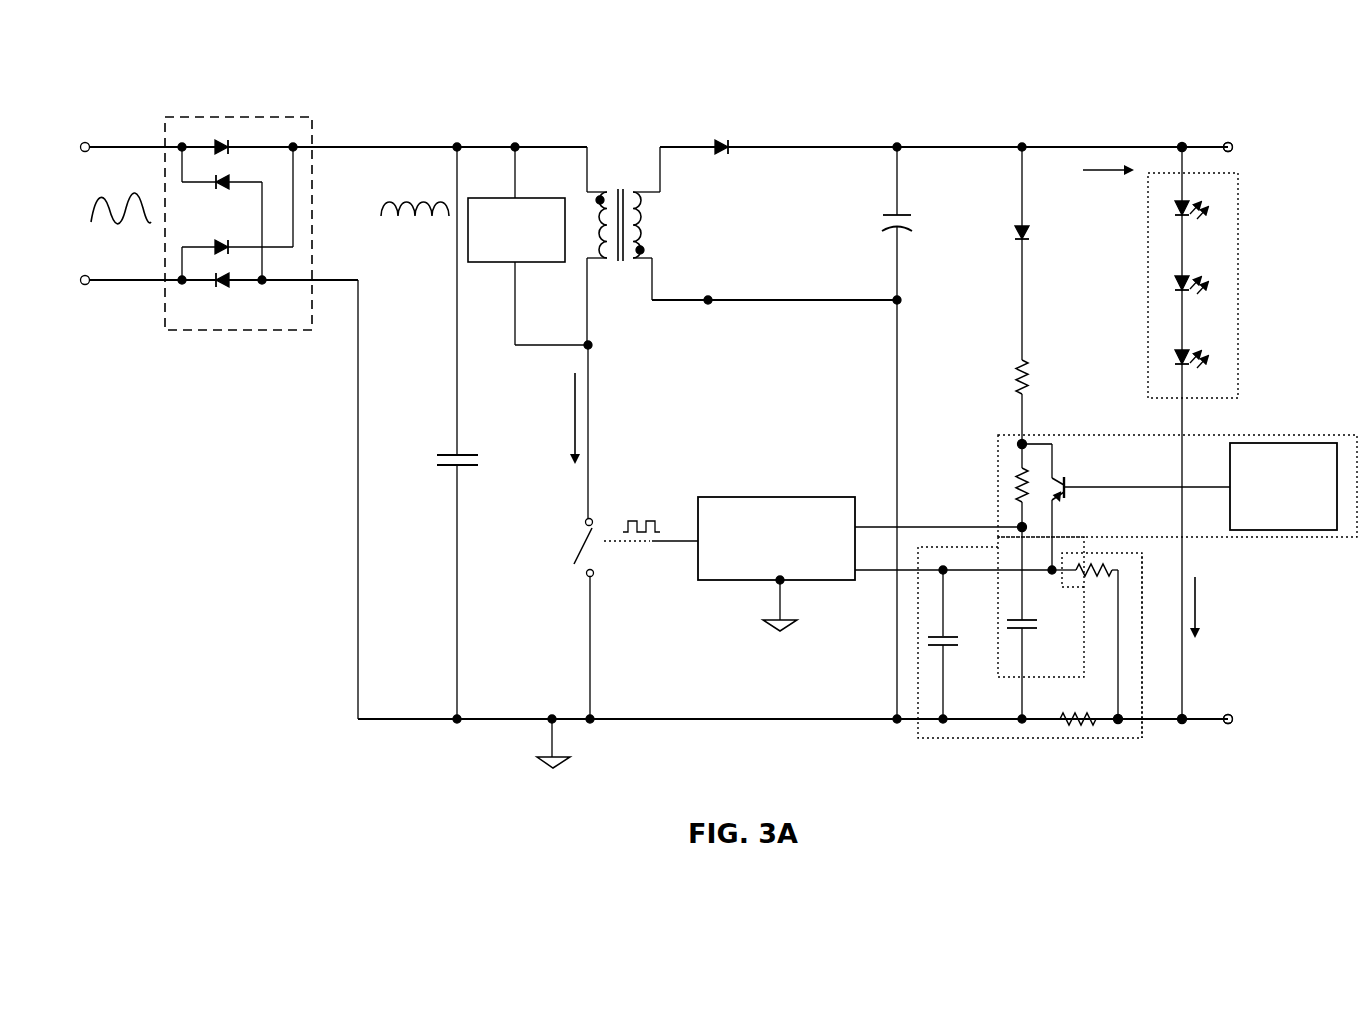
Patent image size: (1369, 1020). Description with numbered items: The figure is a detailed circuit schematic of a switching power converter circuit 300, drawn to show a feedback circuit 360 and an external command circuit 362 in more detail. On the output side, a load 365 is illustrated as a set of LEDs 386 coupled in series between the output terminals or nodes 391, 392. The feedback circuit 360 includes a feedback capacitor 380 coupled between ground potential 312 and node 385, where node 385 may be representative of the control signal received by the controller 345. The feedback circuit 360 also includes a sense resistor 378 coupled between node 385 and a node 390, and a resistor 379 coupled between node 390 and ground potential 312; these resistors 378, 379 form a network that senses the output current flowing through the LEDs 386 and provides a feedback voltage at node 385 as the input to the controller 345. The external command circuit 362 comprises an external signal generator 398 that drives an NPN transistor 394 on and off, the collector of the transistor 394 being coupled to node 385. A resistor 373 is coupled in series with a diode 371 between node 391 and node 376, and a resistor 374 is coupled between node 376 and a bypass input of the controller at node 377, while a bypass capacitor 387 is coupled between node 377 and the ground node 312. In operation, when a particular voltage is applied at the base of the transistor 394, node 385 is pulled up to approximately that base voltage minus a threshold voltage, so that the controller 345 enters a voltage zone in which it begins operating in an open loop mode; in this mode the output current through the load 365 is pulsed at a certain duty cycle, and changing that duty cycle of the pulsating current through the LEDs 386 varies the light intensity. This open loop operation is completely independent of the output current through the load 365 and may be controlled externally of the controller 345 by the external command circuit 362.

The switching power converter circuit 300 is at (678, 60).
The ground potential 312 is at (557, 782).
The controller 345 is at (806, 496).
The feedback circuit 360 is at (958, 742).
The external command circuit 362 is at (1268, 547).
The load 365 is at (1140, 385).
The diode 371 is at (1030, 248).
The resistor 373 is at (1012, 373).
The resistor 374 is at (1016, 479).
The node 376 is at (1016, 444).
The node 377 is at (1012, 532).
The sense resistor 378 is at (1098, 555).
The resistor 379 is at (1065, 727).
The feedback capacitor 380 is at (960, 657).
The node 385 is at (940, 560).
The LEDs 386 is at (1172, 210).
The bypass capacitor 387 is at (1036, 632).
The node 390 is at (1112, 728).
The output terminal 391 is at (1182, 140).
The output terminal 392 is at (1175, 727).
The NPN transistor 394 is at (1070, 484).
The external signal generator 398 is at (1292, 440).